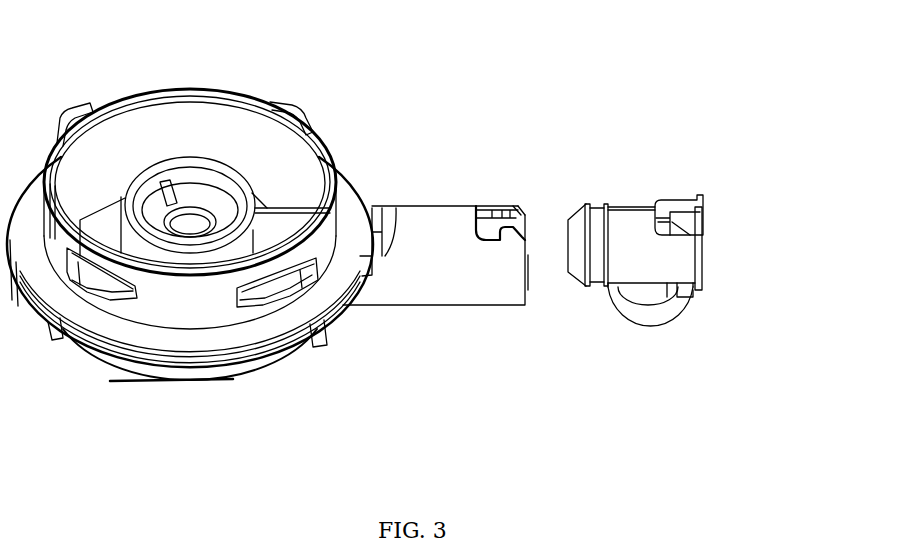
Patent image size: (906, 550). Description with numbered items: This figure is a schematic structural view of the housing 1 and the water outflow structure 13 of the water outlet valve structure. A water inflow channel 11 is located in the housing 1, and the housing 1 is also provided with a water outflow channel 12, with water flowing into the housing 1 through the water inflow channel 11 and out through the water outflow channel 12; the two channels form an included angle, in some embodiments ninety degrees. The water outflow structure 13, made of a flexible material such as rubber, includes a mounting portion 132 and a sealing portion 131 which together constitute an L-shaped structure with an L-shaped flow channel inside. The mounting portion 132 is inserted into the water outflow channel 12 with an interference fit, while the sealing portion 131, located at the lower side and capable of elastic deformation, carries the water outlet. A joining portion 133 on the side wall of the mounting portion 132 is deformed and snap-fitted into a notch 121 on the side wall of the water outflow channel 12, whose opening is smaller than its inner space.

The housing 1 is at (190, 194).
The water inflow channel 11 is at (193, 175).
The water outflow channel 12 is at (435, 333).
The notch 121 is at (490, 242).
The water outflow structure 13 is at (620, 279).
The sealing portion 131 is at (680, 210).
The mounting portion 132 is at (630, 227).
The joining portion 133 is at (650, 303).